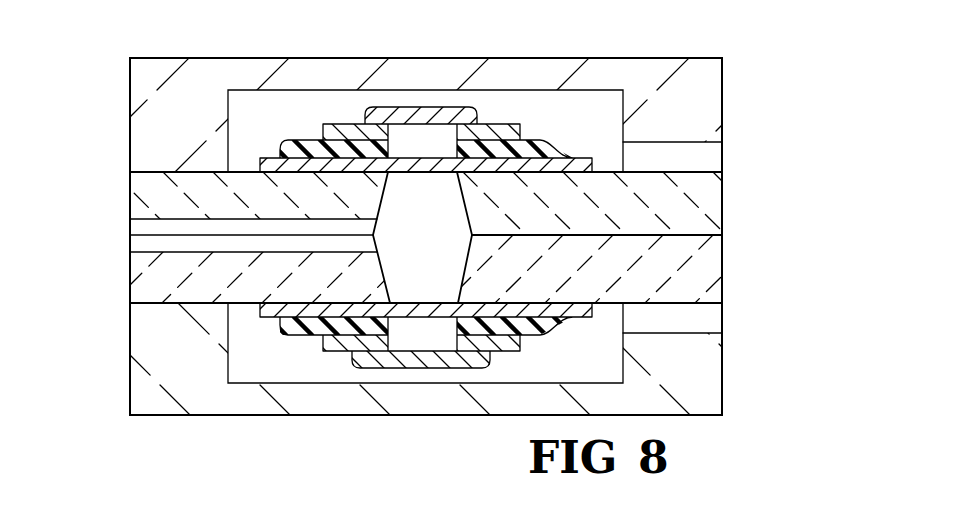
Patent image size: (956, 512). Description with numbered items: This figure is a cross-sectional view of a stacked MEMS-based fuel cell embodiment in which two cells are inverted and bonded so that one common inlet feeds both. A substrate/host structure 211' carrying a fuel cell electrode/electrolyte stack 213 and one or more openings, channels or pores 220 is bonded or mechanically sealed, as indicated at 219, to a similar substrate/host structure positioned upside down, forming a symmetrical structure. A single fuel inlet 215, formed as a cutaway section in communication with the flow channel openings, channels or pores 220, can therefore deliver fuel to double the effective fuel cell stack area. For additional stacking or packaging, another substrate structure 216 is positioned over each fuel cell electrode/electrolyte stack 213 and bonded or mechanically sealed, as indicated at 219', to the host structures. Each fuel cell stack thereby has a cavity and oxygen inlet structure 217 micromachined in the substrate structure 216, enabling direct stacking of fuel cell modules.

The fuel cell electrode/electrolyte stack 213 is at (510, 48).
The substrate structure 216 is at (722, 88).
The cavity and oxygen inlet structure 217 is at (708, 157).
The bond or mechanical seal 219 is at (467, 237).
The bond or mechanical seal 219' is at (120, 236).
The substrate/host structure 211' is at (205, 224).
The fuel inlet 215 is at (130, 228).
The openings, channels or pores 220 is at (447, 248).